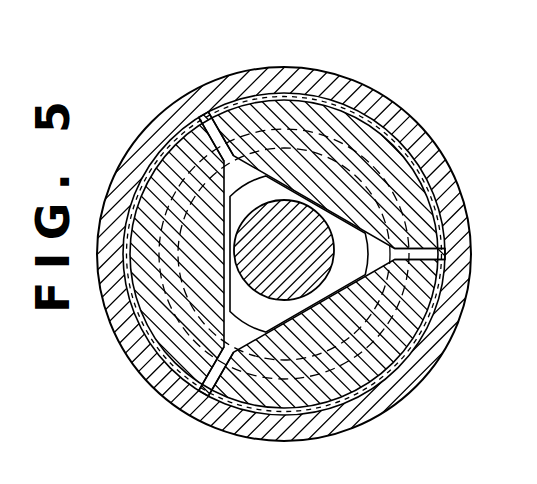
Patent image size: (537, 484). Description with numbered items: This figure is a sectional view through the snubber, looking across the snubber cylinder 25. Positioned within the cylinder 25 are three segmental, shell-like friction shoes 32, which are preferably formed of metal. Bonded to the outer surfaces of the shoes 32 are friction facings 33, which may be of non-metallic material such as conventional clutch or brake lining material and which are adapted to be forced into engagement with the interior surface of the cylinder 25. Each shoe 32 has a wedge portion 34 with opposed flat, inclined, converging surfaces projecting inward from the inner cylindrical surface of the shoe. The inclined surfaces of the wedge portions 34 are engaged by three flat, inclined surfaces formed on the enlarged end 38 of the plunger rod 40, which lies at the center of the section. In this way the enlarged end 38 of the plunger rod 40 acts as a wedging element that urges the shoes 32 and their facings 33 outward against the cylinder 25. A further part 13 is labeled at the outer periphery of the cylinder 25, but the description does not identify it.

The housing 13 is at (474, 266).
The snubber cylinder 25 is at (248, 78).
The friction shoes 32 is at (140, 200).
The friction facings 33 is at (378, 125).
The wedge portion 34 is at (333, 148).
The enlarged end 38 is at (273, 309).
The plunger rod 40 is at (284, 250).